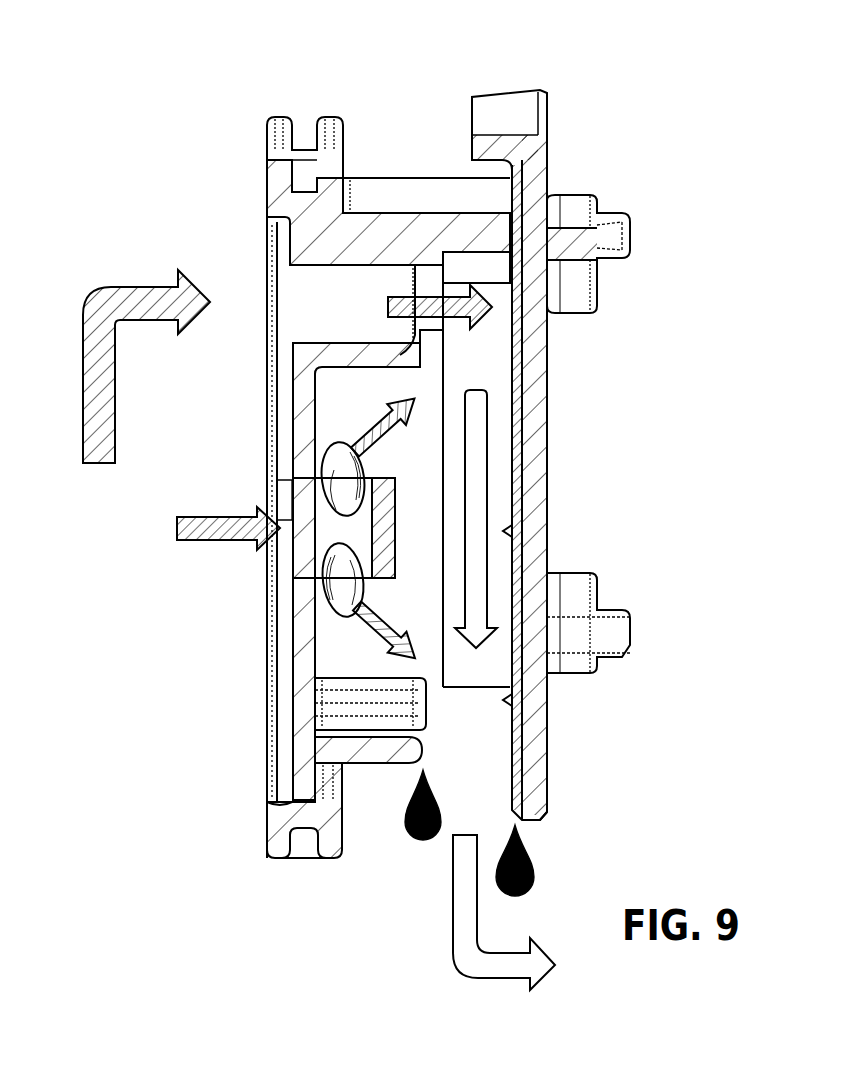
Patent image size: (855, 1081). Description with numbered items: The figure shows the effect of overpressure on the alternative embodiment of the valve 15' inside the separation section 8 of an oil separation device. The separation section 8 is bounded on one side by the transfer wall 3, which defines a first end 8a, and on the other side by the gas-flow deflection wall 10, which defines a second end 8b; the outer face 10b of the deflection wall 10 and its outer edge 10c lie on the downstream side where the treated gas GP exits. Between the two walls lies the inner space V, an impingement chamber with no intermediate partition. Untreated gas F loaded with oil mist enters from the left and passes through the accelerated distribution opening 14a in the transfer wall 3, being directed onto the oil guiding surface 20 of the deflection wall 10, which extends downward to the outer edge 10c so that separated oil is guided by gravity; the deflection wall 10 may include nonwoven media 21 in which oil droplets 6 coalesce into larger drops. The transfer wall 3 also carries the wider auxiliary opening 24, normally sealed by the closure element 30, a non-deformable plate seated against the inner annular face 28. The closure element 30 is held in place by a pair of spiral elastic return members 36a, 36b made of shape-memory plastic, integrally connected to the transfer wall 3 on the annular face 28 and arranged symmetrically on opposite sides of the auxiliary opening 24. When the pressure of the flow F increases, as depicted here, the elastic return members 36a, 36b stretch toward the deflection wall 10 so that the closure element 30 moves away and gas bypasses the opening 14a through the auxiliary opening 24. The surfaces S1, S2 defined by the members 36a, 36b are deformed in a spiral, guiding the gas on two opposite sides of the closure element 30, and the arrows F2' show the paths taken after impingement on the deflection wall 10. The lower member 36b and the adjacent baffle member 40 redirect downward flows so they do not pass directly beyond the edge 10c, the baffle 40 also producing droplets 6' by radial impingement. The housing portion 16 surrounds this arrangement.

The separation section 8 is at (585, 85).
The first end 8a is at (268, 822).
The second end 8b is at (547, 798).
The transfer wall 3 is at (268, 856).
The accelerated distribution opening 14a is at (432, 262).
The inner housing 16 is at (371, 352).
The gas-flow deflection wall 10 is at (551, 168).
The outer face 10b is at (545, 358).
The outer edge 10c is at (546, 818).
The valve 15' is at (498, 519).
The nonwoven media 21 is at (506, 531).
The oil guiding surface 20 is at (506, 701).
The auxiliary opening 24 is at (312, 485).
The inner annular face 28 is at (318, 478).
The closure element 30 is at (372, 527).
The elastic return member 36a is at (323, 462).
The elastic return member 36b is at (322, 600).
The baffle member 40 is at (375, 756).
The oil droplets 6 is at (534, 875).
The droplets 6' is at (418, 836).
The inner space V is at (493, 363).
The treated gas GP is at (453, 938).
The untreated gas F is at (128, 298).
The arrows F2' is at (394, 616).
The surface S1 is at (347, 452).
The surface S2 is at (348, 612).